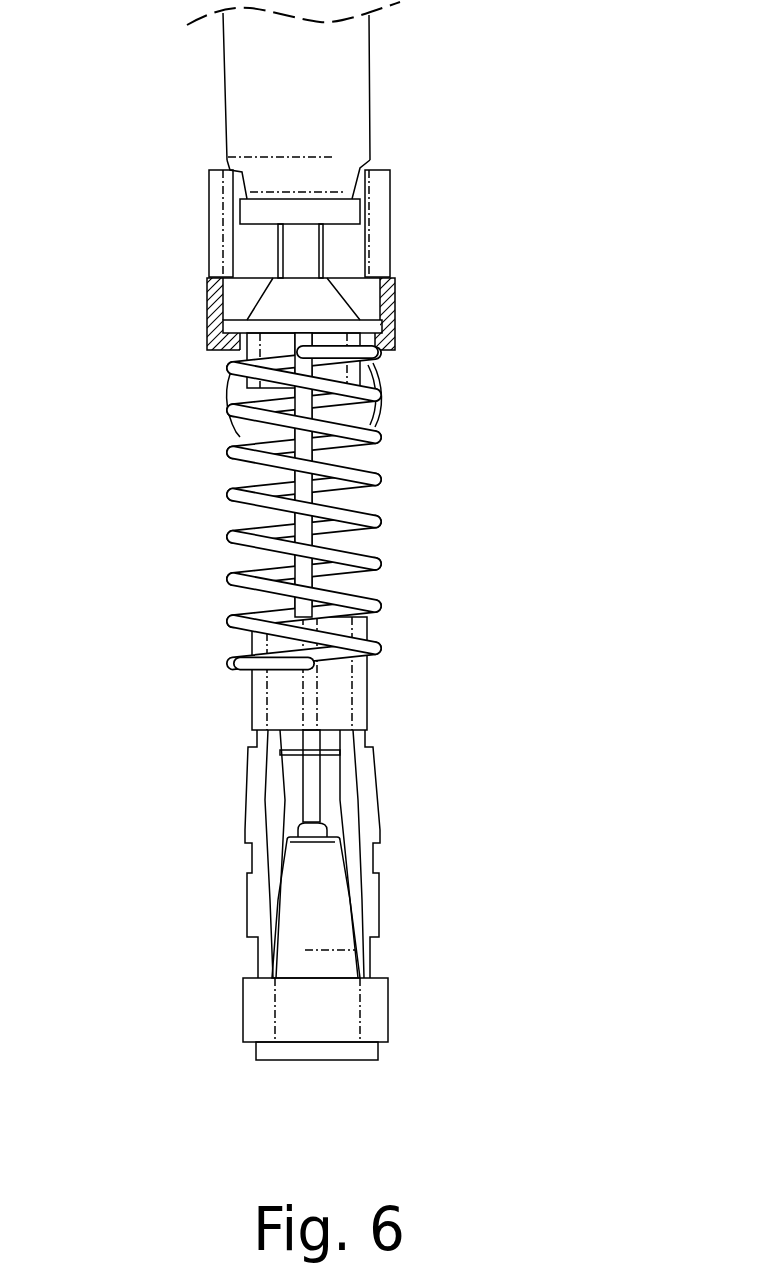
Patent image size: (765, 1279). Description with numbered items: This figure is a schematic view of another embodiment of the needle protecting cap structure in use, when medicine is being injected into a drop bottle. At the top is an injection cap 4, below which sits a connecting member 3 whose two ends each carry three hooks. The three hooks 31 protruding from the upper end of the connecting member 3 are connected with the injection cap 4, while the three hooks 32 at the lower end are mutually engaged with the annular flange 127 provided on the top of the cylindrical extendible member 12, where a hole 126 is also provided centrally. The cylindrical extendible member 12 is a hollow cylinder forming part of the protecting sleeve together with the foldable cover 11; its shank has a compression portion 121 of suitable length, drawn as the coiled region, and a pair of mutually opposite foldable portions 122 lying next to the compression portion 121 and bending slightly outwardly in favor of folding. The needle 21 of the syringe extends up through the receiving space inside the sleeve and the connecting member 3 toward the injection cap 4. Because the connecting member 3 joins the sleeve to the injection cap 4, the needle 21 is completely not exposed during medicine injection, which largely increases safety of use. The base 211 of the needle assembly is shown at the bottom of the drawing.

The connecting member 3 is at (418, 216).
The injection cap 4 is at (265, 83).
The foldable cover 11 is at (382, 393).
The cylindrical extendible member 12 is at (257, 690).
The needle 21 is at (338, 905).
The hooks 31 is at (222, 180).
The hooks 32 is at (227, 350).
The compression portion 121 is at (238, 495).
The foldable portions 122 is at (253, 803).
The hole 126 is at (302, 277).
The annular flange 127 is at (237, 318).
The base 211 is at (257, 1048).